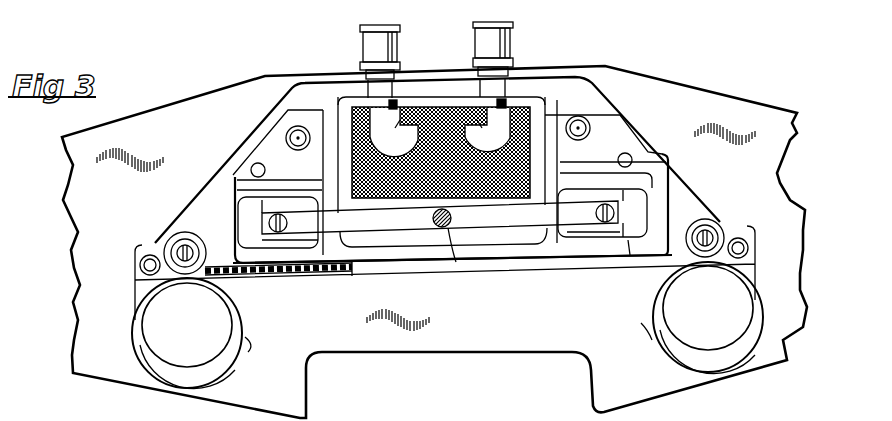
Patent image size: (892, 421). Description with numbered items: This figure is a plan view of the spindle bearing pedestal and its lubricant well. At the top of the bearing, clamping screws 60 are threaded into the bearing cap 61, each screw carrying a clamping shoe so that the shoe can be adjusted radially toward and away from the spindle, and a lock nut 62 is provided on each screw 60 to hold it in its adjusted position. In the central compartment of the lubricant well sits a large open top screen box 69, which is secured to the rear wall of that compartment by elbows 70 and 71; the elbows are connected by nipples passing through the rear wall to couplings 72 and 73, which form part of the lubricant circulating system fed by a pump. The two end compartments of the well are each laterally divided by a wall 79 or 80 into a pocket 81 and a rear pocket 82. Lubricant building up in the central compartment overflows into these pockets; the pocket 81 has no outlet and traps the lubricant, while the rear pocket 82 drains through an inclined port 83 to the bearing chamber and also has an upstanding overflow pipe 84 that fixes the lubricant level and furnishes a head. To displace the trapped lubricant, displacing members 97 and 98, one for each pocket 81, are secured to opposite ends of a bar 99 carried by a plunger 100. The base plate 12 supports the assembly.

The base plate 12 is at (444, 323).
The clamping screw 60 is at (178, 238).
The bearing cap 61 is at (603, 90).
The lock nut 62 is at (157, 251).
The screen box 69 is at (526, 100).
The elbow 70 is at (397, 137).
The elbow 71 is at (474, 132).
The coupling 72 is at (386, 16).
The coupling 73 is at (487, 26).
The wall 79 is at (668, 168).
The wall 80 is at (233, 186).
The pocket 81 is at (240, 212).
The rear pocket 82 is at (275, 133).
The inclined port 83 is at (247, 166).
The overflow pipe 84 is at (290, 124).
The lubricant displacing member 97 is at (628, 240).
The lubricant displacing member 98 is at (310, 245).
The bar 99 is at (449, 268).
The plunger 100 is at (447, 228).